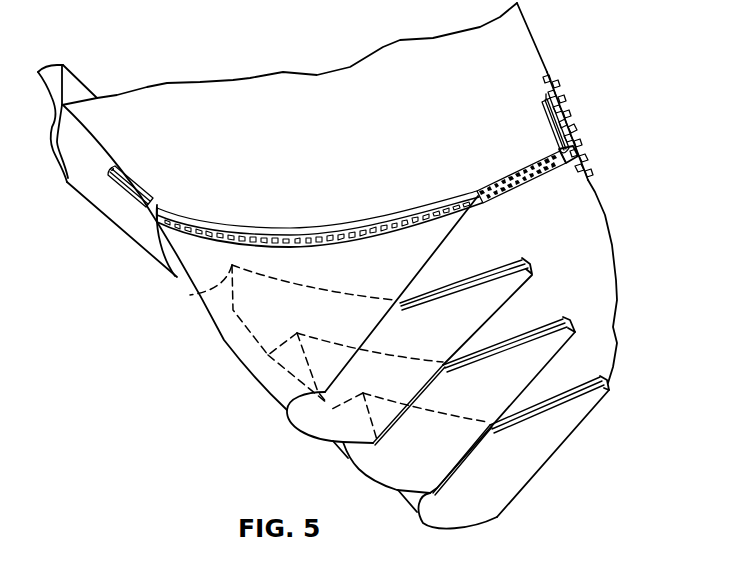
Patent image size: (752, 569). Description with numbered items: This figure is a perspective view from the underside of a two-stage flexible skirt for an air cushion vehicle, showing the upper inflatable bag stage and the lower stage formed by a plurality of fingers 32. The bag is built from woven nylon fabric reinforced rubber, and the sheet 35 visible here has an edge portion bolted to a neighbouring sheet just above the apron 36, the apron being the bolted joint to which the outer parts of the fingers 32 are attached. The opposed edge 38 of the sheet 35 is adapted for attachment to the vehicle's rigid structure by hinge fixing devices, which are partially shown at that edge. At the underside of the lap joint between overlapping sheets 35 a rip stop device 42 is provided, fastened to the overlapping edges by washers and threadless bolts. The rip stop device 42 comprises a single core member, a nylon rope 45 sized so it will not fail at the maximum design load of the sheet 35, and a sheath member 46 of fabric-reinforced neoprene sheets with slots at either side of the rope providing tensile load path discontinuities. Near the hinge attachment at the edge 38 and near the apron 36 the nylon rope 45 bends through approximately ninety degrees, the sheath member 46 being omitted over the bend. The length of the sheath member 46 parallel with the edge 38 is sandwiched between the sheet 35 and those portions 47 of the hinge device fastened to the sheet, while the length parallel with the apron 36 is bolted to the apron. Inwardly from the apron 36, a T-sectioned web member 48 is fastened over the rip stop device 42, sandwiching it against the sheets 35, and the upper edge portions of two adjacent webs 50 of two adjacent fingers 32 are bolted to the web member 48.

The fingers 32 is at (212, 327).
The sheet 35 is at (307, 130).
The apron 36 is at (133, 233).
The edge 38 is at (528, 31).
The rip stop device 42 is at (497, 183).
The nylon rope 45 is at (577, 149).
The sheath member 46 is at (118, 190).
The portions of the hinge device 47 is at (567, 110).
The T-sectioned web member 48 is at (273, 243).
The webs 50 is at (448, 307).